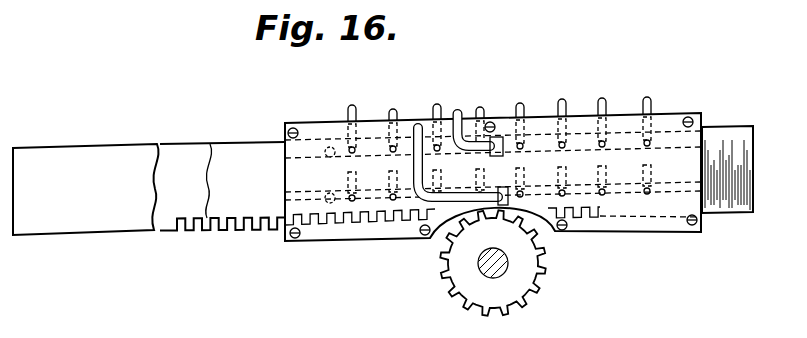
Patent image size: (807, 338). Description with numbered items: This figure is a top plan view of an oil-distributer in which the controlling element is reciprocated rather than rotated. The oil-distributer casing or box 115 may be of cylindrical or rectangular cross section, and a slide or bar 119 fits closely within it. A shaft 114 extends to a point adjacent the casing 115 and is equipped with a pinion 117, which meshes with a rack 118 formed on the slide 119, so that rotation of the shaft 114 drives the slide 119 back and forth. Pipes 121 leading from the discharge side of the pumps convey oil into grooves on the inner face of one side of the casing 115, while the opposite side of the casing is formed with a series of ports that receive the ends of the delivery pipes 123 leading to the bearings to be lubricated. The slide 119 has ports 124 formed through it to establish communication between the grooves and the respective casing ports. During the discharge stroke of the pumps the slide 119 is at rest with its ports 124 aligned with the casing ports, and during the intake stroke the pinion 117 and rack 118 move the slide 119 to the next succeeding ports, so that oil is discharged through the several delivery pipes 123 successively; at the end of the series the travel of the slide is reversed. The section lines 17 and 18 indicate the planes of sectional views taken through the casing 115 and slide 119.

The slide 119 is at (86, 189).
The rack 118 is at (263, 232).
The oil-distributer casing 115 is at (645, 237).
The delivery pipes 123 is at (598, 103).
The ports 124 is at (328, 146).
The pipes 121 is at (457, 110).
The pinion 117 is at (517, 287).
The shaft 114 is at (483, 273).
The section line 17- 17 is at (262, 186).
The section line 18- 18 is at (352, 106).